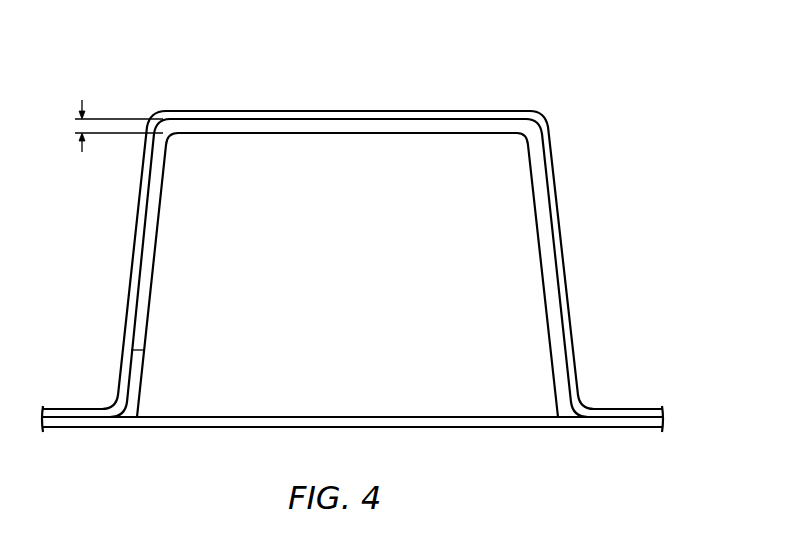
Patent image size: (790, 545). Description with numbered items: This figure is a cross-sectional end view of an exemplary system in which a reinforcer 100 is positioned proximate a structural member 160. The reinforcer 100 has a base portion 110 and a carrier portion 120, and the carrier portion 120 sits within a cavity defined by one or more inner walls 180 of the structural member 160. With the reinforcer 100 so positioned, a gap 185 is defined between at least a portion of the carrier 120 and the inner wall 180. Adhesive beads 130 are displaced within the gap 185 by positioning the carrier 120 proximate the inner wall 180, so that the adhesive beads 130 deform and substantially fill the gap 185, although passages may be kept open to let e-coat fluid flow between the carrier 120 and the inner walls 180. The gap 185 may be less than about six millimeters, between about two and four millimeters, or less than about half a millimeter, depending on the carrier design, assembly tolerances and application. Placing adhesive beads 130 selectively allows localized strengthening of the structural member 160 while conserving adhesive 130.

The reinforcer 100 is at (367, 273).
The base portion 110 is at (615, 422).
The carrier portion 120 is at (197, 372).
The adhesive beads 130 is at (428, 125).
The structural member 160 is at (633, 412).
The inner wall 180 is at (144, 350).
The gap 185 is at (114, 113).